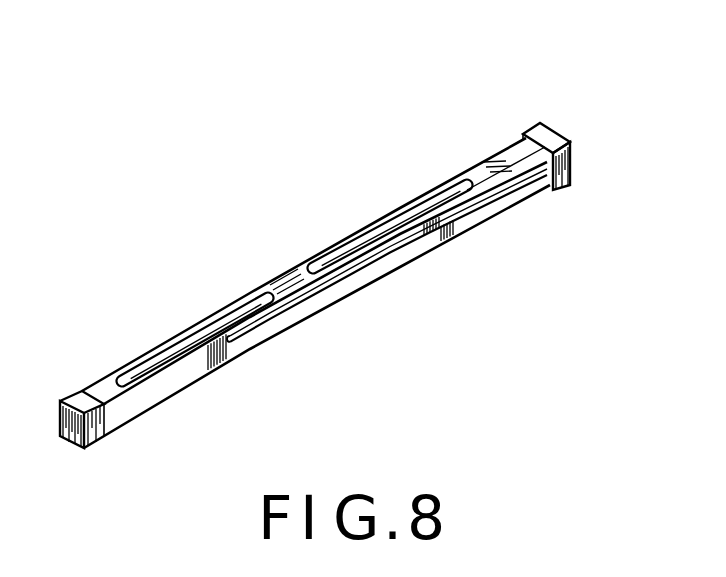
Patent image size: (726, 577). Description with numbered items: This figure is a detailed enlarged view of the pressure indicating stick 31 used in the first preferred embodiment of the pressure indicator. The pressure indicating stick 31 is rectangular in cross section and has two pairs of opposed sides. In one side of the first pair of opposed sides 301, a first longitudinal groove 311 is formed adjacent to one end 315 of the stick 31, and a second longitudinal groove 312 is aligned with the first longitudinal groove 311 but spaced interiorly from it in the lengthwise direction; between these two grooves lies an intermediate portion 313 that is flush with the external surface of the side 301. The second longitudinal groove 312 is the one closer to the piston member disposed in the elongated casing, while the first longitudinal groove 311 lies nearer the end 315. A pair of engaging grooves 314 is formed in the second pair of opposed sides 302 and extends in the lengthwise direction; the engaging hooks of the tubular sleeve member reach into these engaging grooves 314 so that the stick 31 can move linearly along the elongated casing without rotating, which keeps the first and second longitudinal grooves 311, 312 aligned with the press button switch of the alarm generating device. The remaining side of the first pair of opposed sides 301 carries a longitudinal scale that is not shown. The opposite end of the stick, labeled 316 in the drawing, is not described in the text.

The pressure indicating stick 31 is at (127, 417).
The first pair of opposed sides 301 is at (485, 173).
The second pair of opposed sides 302 is at (197, 372).
The first longitudinal groove 311 is at (183, 349).
The second longitudinal groove 312 is at (393, 221).
The intermediate portion 313 is at (291, 281).
The engaging grooves 314 is at (260, 340).
The end of the stick 315 is at (84, 410).
The right end stop 316 is at (600, 180).